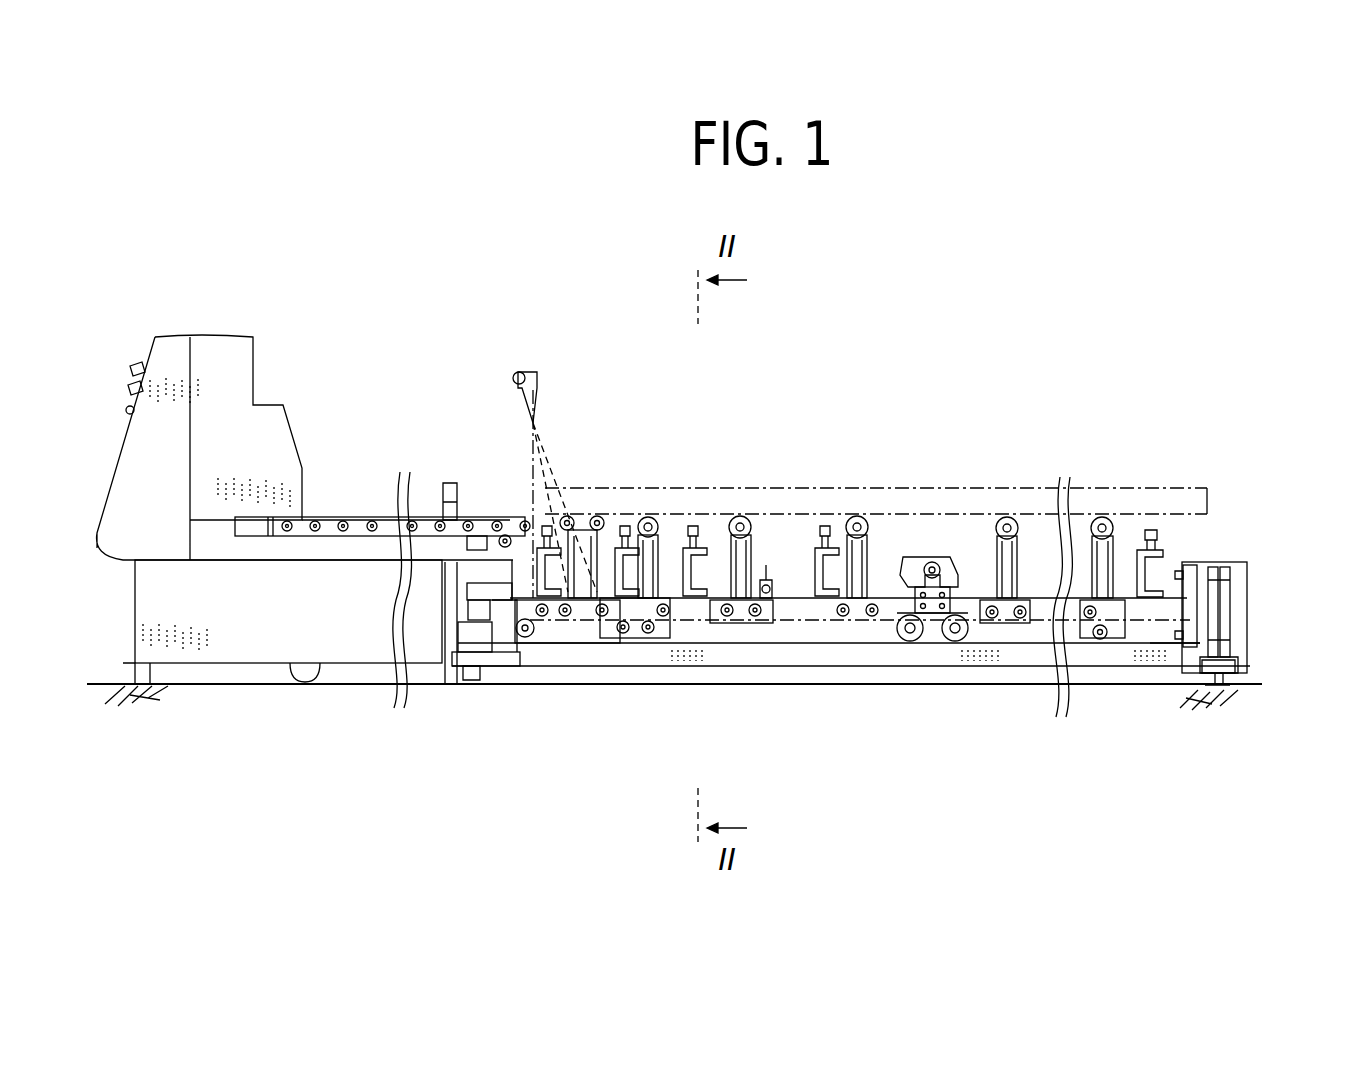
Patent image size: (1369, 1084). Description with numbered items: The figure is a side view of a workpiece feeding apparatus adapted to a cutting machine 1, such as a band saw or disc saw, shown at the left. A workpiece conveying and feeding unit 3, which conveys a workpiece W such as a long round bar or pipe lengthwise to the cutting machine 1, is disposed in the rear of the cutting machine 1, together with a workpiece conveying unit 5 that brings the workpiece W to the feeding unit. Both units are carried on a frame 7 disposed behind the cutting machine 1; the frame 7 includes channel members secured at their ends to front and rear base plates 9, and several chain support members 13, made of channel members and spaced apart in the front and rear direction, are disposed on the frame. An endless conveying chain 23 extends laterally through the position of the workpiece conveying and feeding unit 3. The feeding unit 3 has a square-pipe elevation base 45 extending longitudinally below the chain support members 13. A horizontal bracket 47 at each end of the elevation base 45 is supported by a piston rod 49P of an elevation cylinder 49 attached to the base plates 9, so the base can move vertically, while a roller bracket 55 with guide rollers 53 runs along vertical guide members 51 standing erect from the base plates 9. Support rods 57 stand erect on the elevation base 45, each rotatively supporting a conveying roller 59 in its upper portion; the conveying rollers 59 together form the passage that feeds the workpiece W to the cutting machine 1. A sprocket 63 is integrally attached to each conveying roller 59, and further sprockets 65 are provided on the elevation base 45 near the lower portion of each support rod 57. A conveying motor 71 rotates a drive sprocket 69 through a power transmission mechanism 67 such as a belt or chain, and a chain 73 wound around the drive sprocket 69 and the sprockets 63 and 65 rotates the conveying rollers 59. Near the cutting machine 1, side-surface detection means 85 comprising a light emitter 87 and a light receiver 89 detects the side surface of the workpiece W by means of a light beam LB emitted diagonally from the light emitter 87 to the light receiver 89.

The cutting machine 1 is at (233, 335).
The workpiece conveying and feeding unit 3 is at (798, 648).
The workpiece conveying unit 5 is at (1172, 536).
The frame 7 is at (533, 664).
The base plates 9 is at (505, 688).
The chain support members 13 is at (820, 528).
The conveying chain 23 is at (655, 522).
The elevation base 45 is at (1152, 642).
The bracket 47 is at (470, 590).
The elevation cylinder 49 is at (436, 660).
The piston rod 49P is at (476, 610).
The vertical guide members 51 is at (1229, 635).
The guide rollers 53 is at (1229, 625).
The roller bracket 55 is at (1195, 567).
The support rods 57 is at (767, 565).
The conveying roller 59 is at (733, 545).
The sprocket 63 is at (736, 518).
The sprockets 65 is at (742, 625).
The power transmission mechanism 67 is at (912, 556).
The drive sprocket 69 is at (950, 642).
The conveying motor 71 is at (936, 560).
The chain 73 is at (817, 663).
The side-surface detection means 85 is at (522, 357).
The light emitter 87 is at (583, 525).
The light receiver 89 is at (514, 375).
The light beam LB is at (540, 420).
The workpiece W is at (1030, 500).